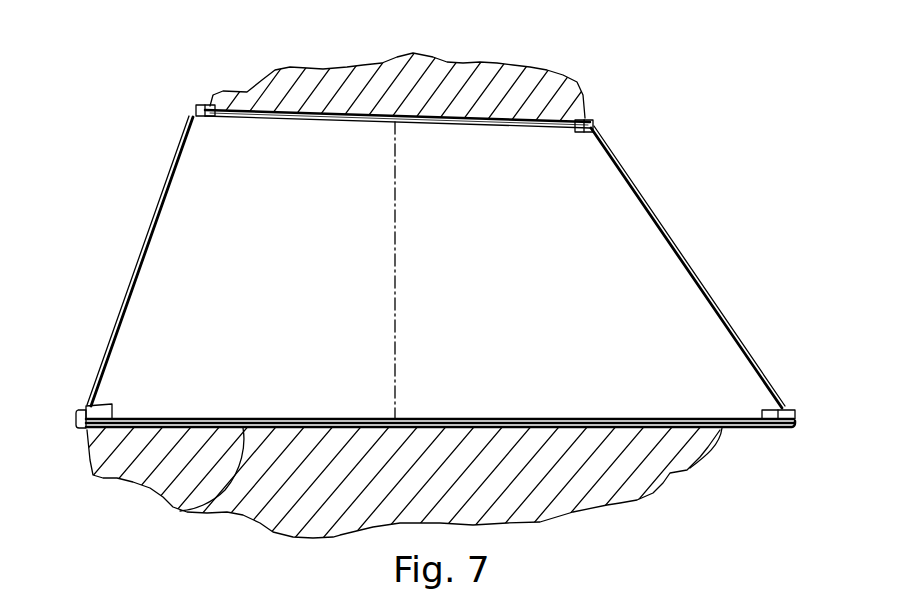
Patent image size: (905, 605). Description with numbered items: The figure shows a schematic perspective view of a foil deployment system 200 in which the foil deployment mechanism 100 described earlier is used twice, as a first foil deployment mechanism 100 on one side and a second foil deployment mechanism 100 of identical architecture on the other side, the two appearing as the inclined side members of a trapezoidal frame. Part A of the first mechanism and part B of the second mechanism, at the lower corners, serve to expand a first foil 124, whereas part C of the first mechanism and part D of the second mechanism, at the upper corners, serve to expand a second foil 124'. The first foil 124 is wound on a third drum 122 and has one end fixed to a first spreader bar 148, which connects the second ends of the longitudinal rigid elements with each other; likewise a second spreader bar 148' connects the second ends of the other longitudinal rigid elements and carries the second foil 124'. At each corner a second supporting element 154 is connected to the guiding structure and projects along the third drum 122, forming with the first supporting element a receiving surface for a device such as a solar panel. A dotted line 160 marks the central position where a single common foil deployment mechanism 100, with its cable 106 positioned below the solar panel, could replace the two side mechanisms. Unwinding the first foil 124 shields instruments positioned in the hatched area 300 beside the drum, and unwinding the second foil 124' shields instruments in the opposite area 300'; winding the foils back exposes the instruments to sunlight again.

The foil deployment mechanism 100 is at (809, 420).
The cable 106 is at (116, 347).
The third drum 122 is at (497, 124).
The first foil 124 is at (440, 492).
The second foil 124' is at (397, 154).
The first spreader bar 148 is at (440, 383).
The second spreader bar 148' is at (397, 69).
The second supporting element 154 is at (209, 120).
The dotted line 160 is at (396, 259).
The foil deployment system 200 is at (656, 82).
The area 300 is at (367, 498).
The area 300' is at (413, 73).
The part of first foil deployment mechanism A is at (71, 447).
The part of second foil deployment mechanism B is at (786, 453).
The part of first foil deployment mechanism C is at (199, 85).
The part of second foil deployment mechanism D is at (596, 98).